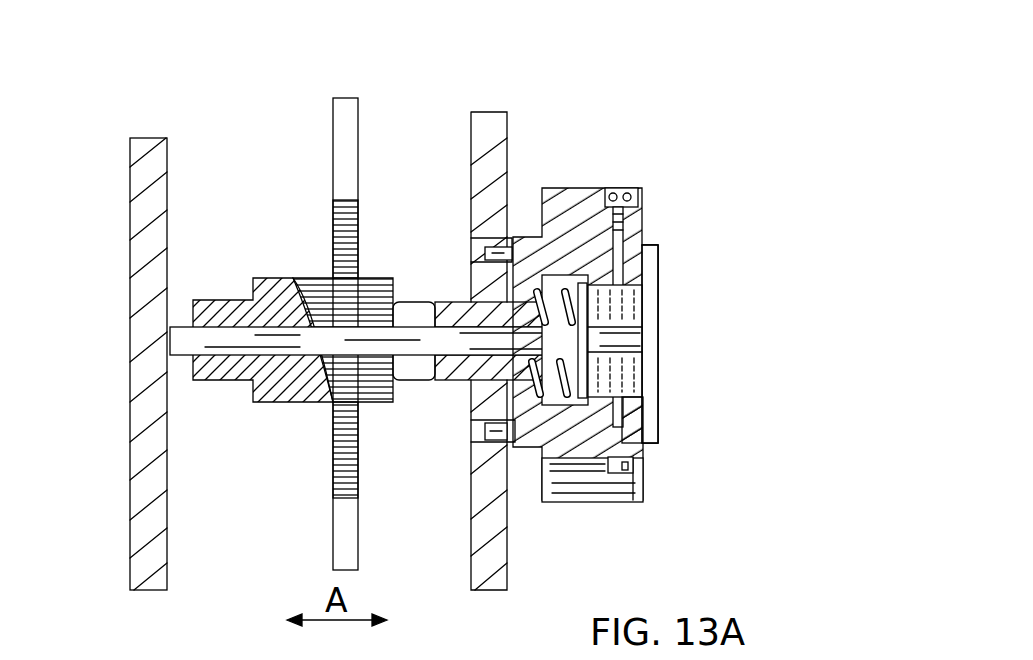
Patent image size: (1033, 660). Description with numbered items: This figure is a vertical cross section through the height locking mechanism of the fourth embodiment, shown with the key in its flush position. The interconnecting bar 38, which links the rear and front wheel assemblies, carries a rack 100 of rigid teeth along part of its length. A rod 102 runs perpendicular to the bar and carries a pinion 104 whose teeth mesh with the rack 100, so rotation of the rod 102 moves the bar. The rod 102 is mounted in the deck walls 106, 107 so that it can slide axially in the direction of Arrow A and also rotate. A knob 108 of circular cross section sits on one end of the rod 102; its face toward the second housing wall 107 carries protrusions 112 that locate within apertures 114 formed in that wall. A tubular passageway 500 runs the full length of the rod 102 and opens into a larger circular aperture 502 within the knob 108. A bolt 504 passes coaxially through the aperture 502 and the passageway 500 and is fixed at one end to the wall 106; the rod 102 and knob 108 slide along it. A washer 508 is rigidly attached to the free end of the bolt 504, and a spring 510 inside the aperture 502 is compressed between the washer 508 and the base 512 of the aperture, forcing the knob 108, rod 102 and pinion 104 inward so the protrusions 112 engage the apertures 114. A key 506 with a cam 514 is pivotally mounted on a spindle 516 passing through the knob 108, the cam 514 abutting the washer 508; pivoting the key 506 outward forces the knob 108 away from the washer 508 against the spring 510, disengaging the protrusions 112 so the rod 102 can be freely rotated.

The interconnecting bar 38 is at (338, 118).
The rack 100 is at (360, 222).
The rod 102 is at (424, 363).
The pinion 104 is at (307, 278).
The wall 106 is at (137, 182).
The second housing wall 107 is at (484, 135).
The knob 108 is at (622, 500).
The protrusions 112 is at (490, 247).
The apertures 114 is at (482, 250).
The tubular passageway 500 is at (218, 327).
The larger circular aperture 502 is at (563, 290).
The bolt 504 is at (172, 340).
The key 506 is at (678, 307).
The washer 508 is at (645, 426).
The spring 510 is at (570, 400).
The base 512 is at (540, 285).
The cam 514 is at (618, 328).
The spindle 516 is at (657, 342).